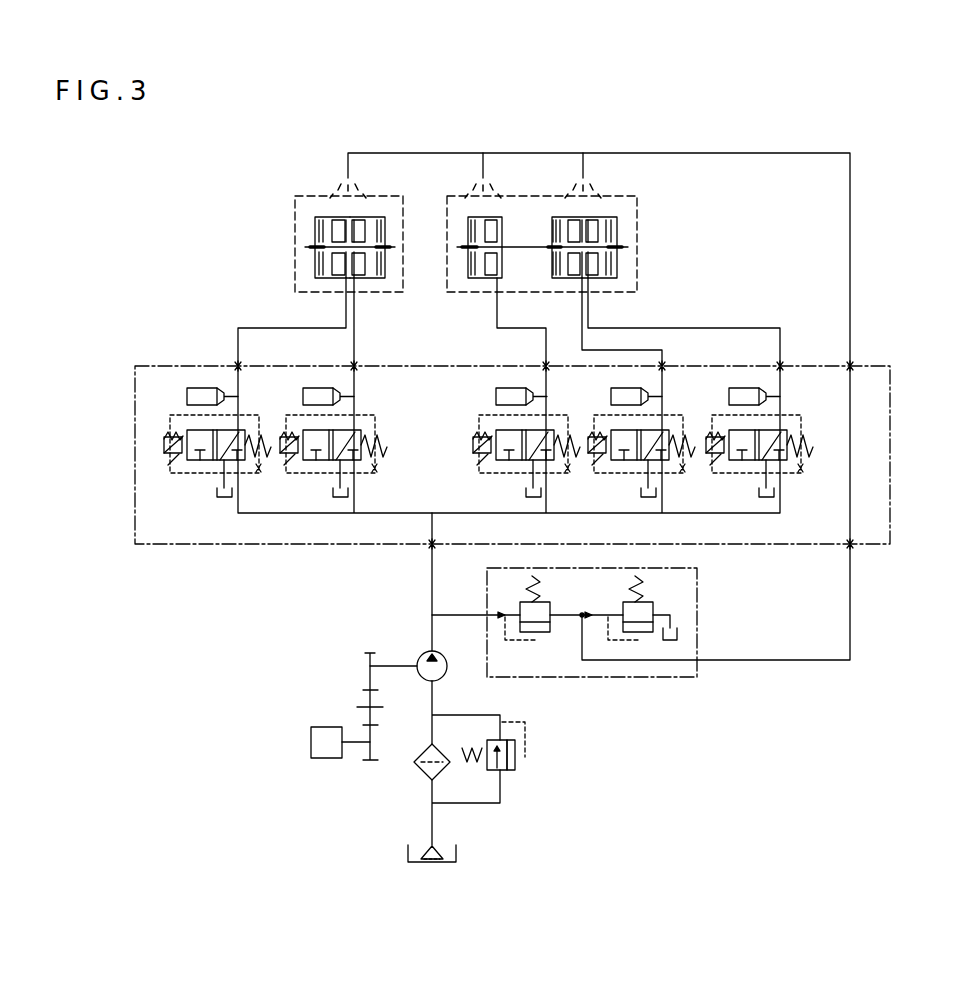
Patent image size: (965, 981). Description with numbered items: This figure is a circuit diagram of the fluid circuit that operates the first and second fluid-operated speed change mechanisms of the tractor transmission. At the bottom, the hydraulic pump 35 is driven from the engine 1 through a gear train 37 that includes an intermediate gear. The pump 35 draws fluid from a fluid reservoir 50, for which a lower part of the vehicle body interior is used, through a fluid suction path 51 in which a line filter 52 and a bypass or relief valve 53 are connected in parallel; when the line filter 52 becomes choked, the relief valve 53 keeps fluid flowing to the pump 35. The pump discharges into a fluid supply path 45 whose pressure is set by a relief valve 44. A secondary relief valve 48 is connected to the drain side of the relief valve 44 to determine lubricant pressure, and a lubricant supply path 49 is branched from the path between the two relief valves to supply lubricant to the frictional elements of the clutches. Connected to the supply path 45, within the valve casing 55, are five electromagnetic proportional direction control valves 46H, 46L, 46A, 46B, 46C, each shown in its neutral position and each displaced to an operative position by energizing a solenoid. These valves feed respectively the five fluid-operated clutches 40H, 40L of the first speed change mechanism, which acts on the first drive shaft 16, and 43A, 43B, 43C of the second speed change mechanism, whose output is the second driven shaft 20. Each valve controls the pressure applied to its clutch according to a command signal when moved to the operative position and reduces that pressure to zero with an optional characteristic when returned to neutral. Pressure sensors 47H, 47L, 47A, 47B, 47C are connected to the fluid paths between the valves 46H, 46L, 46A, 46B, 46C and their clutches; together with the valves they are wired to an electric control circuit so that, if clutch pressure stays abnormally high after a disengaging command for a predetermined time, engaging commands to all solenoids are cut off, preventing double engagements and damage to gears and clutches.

The engine 1 is at (308, 745).
The first drive shaft 16 is at (310, 246).
The second driven shaft 20 is at (529, 248).
The hydraulic pump 35 is at (420, 656).
The gear train 37 is at (355, 691).
The fluid-operated clutch 40L is at (334, 217).
The fluid-operated clutch 40H is at (380, 217).
The fluid-operated clutch 43A is at (553, 216).
The fluid-operated clutch 43B is at (618, 222).
The fluid-operated clutch 43C is at (475, 279).
The relief valve 44 is at (549, 606).
The fluid supply path 45 is at (430, 574).
The electromagnetic proportional direction control valve 46L is at (188, 430).
The electromagnetic proportional direction control valve 46H is at (300, 428).
The electromagnetic proportional direction control valve 46A is at (606, 466).
The electromagnetic proportional direction control valve 46B is at (787, 432).
The electromagnetic proportional direction control valve 46C is at (497, 432).
The pressure sensor 47L is at (198, 388).
The pressure sensor 47H is at (333, 395).
The pressure sensor 47A is at (612, 396).
The pressure sensor 47B is at (735, 392).
The pressure sensor 47C is at (496, 397).
The secondary relief valve 48 is at (655, 606).
The lubricant supply path 49 is at (851, 278).
The fluid reservoir 50 is at (405, 855).
The fluid suction path 51 is at (436, 695).
The line filter 52 is at (424, 774).
The bypass or relief valve 53 is at (516, 766).
The valve casing 55 is at (128, 505).